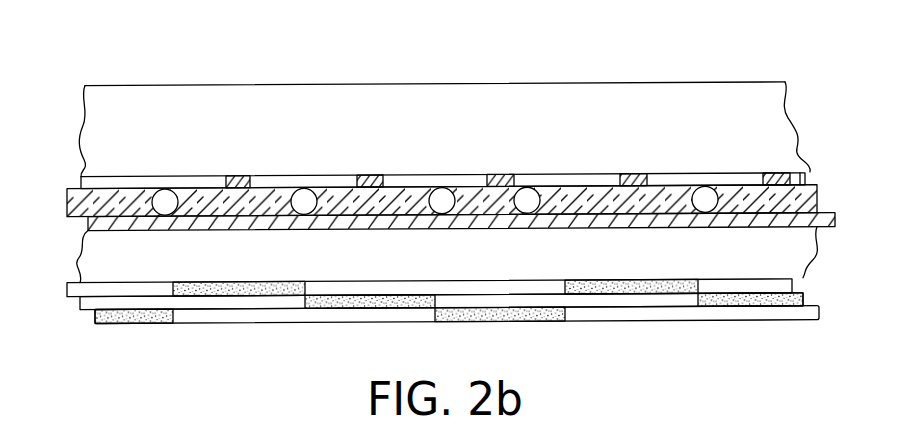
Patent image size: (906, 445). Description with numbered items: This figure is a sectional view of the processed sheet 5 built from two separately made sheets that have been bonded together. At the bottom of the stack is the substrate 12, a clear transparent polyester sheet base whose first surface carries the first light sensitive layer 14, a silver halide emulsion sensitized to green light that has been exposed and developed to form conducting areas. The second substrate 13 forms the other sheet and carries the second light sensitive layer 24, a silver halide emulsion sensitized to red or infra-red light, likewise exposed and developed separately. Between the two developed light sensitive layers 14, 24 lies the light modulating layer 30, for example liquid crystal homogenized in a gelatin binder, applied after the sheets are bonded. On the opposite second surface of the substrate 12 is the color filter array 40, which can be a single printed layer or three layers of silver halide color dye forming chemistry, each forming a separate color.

The sheet 5 is at (190, 64).
The second substrate 13 is at (133, 108).
The second light sensitive layer 24 is at (80, 182).
The light modulating layer 30 is at (78, 208).
The first light sensitive layer 14 is at (93, 224).
The substrate 12 is at (90, 260).
The color filter array 40 is at (58, 282).